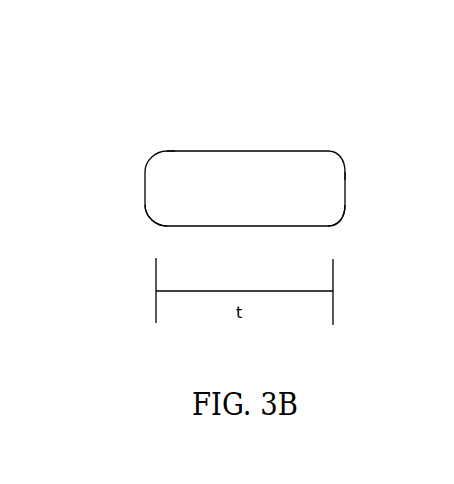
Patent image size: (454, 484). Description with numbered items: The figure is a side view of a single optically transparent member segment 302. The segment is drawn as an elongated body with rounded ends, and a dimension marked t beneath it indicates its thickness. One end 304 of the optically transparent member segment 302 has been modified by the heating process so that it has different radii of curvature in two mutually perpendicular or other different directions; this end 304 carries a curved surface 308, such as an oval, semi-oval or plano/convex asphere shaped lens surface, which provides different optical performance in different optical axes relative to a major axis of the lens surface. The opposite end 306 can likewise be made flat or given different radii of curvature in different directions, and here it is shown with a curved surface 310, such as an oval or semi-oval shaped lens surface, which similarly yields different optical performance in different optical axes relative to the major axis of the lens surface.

The optically transparent member segment 302 is at (253, 130).
The end 304 is at (131, 226).
The end 306 is at (354, 228).
The curved surface 308 is at (145, 168).
The curved surface 310 is at (344, 170).